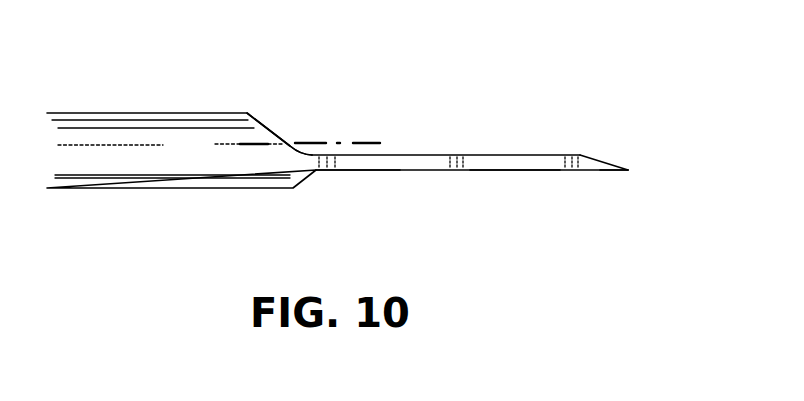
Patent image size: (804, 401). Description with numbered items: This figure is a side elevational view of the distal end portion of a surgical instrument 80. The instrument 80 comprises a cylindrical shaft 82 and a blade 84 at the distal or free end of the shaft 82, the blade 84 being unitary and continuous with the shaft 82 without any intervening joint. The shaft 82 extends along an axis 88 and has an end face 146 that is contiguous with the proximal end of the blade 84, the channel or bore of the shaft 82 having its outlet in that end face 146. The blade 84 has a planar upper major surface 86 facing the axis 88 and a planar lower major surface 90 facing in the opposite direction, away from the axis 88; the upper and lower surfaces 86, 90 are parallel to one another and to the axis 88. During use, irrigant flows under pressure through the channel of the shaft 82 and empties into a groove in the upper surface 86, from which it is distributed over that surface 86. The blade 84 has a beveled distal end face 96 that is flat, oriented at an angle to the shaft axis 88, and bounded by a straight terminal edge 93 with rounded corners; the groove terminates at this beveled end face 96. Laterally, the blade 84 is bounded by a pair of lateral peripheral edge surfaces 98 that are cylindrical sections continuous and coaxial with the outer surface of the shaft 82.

The surgical instrument 80 is at (416, 77).
The cylindrical shaft 82 is at (75, 121).
The end face 146 is at (272, 131).
The axis 88 is at (365, 143).
The planar upper major surface 86 is at (477, 156).
The planar lower major surface 90 is at (382, 170).
The lateral peripheral edge surfaces 98 is at (513, 170).
The beveled distal end face 96 is at (598, 160).
The straight terminal edge 93 is at (628, 170).
The blade 84 is at (510, 233).